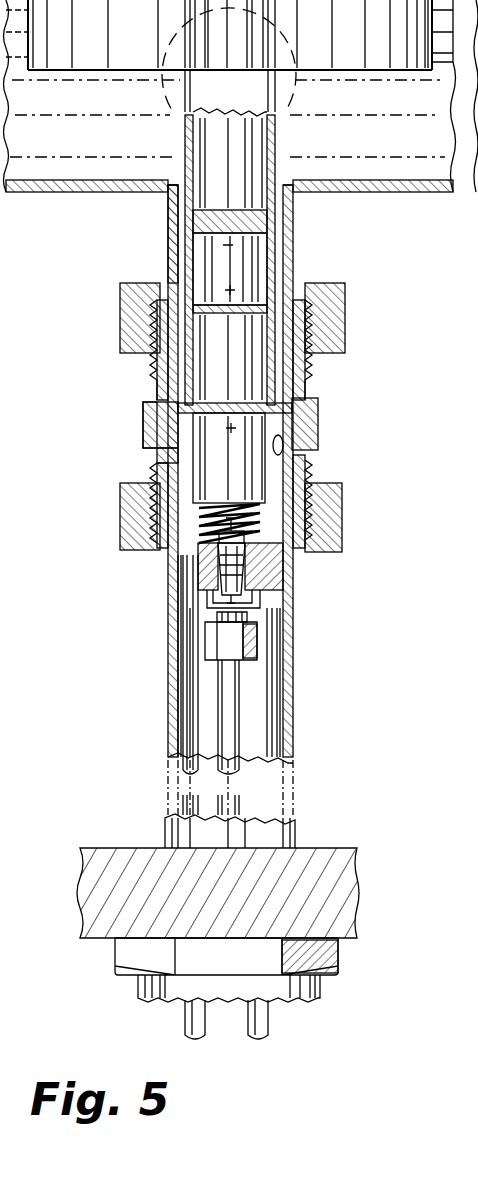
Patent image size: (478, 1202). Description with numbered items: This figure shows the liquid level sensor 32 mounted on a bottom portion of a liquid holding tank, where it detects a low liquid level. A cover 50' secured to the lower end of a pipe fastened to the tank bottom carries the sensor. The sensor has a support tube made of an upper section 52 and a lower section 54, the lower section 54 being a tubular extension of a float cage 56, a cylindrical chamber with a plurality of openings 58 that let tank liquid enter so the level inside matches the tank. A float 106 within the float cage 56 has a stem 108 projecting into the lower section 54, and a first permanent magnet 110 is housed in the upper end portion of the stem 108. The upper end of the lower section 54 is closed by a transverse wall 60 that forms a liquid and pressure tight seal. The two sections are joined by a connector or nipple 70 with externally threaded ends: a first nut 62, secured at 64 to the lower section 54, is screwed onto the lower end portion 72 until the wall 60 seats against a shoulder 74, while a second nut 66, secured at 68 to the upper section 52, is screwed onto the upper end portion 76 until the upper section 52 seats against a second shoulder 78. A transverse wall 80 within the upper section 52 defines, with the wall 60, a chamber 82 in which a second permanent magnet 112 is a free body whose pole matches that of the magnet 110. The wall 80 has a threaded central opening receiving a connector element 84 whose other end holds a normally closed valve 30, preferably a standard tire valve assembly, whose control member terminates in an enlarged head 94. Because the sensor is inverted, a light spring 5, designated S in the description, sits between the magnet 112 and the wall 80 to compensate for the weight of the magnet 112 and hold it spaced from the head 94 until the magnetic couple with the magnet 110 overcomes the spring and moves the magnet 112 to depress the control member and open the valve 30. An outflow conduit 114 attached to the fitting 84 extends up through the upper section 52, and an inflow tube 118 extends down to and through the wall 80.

The float 106 is at (102, 48).
The openings 58 is at (172, 88).
The float cage 56 is at (88, 190).
The stem 108 is at (175, 190).
The lower section 54 is at (213, 263).
The first permanent magnet 110 is at (170, 237).
The first nut 62 is at (130, 325).
The securing location 64 is at (300, 293).
The lower end portion 72 is at (153, 350).
The transverse wall 60 is at (250, 402).
The shoulder 74 is at (170, 407).
The connector 70 is at (133, 437).
The second shoulder 78 is at (305, 462).
The second permanent magnet 112 is at (205, 467).
The upper end portion 76 is at (160, 502).
The chamber 82 is at (275, 505).
The enlarged head 94 is at (200, 525).
The second nut 66 is at (165, 550).
The transverse wall 80 is at (275, 557).
The light spring 5 is at (160, 550).
The securing location 68 is at (157, 553).
The normally closed valve 30 is at (247, 570).
The connector element 84 is at (257, 615).
The inflow tube 118 is at (195, 665).
The upper section 52 is at (168, 705).
The outflow conduit 114 is at (232, 715).
The liquid level sensor 32 is at (103, 783).
The cover 50' is at (183, 943).